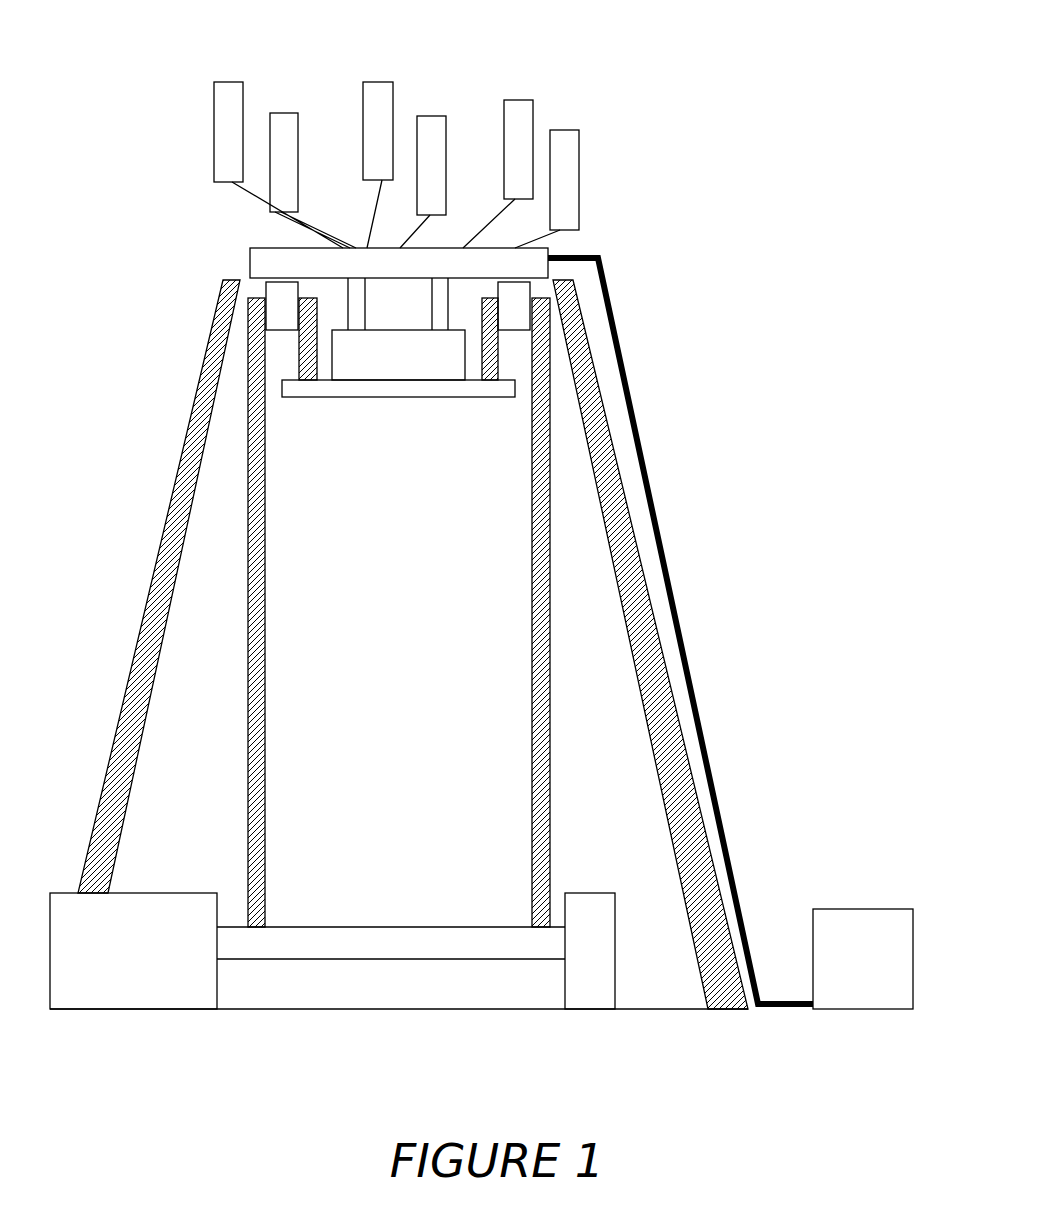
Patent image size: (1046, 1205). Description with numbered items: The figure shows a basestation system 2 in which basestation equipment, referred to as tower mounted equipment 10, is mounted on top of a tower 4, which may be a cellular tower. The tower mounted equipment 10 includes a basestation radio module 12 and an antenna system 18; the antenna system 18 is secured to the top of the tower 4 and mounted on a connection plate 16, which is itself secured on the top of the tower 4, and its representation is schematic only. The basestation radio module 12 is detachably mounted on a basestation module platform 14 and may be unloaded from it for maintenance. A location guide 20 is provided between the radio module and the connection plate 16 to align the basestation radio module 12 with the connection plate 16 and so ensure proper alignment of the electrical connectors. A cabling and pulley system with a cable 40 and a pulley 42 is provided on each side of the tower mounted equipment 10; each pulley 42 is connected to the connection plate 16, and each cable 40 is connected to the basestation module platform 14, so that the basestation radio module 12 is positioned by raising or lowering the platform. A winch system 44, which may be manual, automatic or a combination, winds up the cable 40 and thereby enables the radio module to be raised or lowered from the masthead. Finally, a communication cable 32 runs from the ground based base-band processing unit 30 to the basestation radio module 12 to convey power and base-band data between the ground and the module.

The basestation system 2 is at (640, 52).
The tower 4 is at (165, 595).
The tower mounted equipment 10 is at (660, 95).
The basestation radio module 12 is at (355, 380).
The basestation module platform 14 is at (445, 397).
The connection plate 16 is at (282, 265).
The antenna system 18 is at (580, 82).
The location guide 20 is at (432, 312).
The ground based base-band processing unit 30 is at (848, 909).
The communication cable 32 is at (718, 782).
The cable 40 is at (530, 760).
The pulley 42 is at (290, 330).
The winch system 44 is at (150, 893).